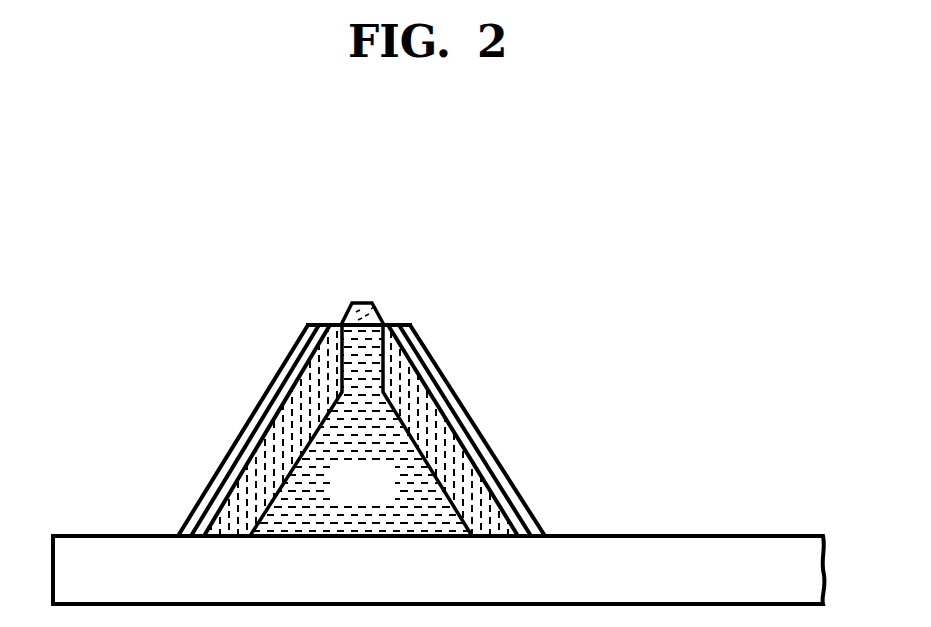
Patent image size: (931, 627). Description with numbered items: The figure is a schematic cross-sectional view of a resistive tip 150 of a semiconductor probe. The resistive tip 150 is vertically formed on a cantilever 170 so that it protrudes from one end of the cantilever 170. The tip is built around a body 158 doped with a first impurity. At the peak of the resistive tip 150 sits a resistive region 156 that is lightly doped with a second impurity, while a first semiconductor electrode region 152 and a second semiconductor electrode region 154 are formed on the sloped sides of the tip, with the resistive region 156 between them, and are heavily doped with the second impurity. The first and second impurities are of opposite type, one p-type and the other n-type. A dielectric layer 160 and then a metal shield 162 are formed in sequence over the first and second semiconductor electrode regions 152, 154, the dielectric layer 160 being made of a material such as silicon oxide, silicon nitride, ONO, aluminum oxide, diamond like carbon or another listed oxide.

The resistive tip 150 is at (209, 373).
The first semiconductor electrode region 152 is at (310, 388).
The second semiconductor electrode region 154 is at (415, 370).
The resistive region 156 is at (362, 302).
The body 158 is at (390, 496).
The dielectric layer 160 is at (462, 407).
The metal shield 162 is at (502, 462).
The cantilever 170 is at (708, 552).